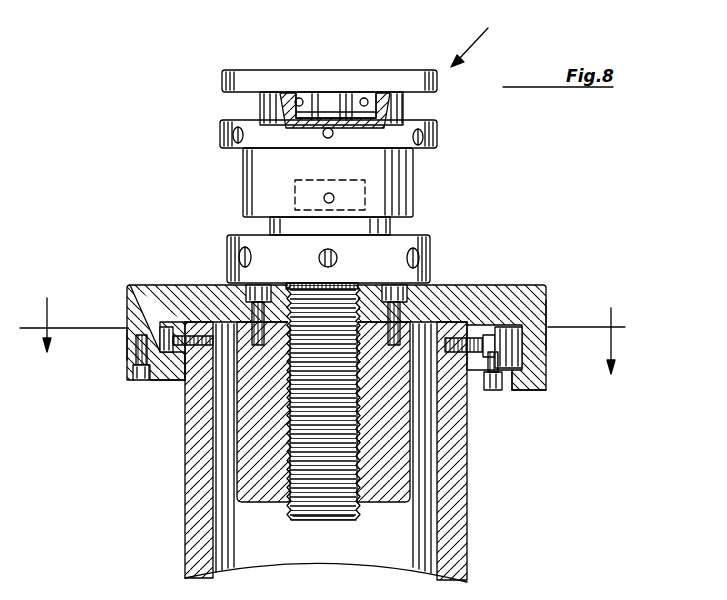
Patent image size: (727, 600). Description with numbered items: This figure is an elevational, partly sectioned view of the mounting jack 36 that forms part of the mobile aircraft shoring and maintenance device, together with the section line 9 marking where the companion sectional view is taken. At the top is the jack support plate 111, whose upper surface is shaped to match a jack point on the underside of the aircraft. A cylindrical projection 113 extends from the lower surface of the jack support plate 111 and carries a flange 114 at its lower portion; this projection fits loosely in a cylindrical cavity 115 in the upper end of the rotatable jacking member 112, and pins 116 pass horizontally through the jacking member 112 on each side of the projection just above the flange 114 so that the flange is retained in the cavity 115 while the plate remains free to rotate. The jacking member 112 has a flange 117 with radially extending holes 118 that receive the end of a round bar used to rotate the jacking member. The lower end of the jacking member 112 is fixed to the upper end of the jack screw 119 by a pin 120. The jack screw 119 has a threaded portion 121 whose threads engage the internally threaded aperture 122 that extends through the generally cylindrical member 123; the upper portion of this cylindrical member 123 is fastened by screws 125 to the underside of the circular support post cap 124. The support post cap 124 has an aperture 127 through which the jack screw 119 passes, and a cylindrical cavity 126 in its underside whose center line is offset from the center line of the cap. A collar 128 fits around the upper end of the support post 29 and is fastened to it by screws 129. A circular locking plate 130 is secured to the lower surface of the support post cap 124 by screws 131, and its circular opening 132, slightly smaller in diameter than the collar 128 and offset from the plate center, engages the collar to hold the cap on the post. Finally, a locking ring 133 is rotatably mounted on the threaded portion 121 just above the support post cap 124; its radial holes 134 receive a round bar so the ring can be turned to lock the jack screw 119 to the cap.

The support post 29 is at (460, 557).
The mounting jack 36 is at (479, 37).
The jack support plate 111 is at (400, 75).
The jacking member 112 is at (415, 175).
The cylindrical projection 113 is at (343, 97).
The flange 114 is at (323, 115).
The cylindrical cavity 115 is at (290, 110).
The pins 116 is at (298, 97).
The flange 117 is at (437, 126).
The radially extending holes 118 is at (437, 141).
The jack screw 119 is at (280, 230).
The pin 120 is at (324, 197).
The threaded portion 121 is at (343, 445).
The aperture 122 is at (353, 490).
The cylindrical member 123 is at (253, 481).
The support post cap 124 is at (547, 297).
The screws 125 is at (248, 293).
The cylindrical cavity 126 is at (522, 352).
The aperture 127 is at (360, 283).
The collar 128 is at (168, 363).
The screws 129 is at (130, 333).
The circular locking plate 130 is at (183, 387).
The screws 131 is at (135, 381).
The circular opening 132 is at (493, 390).
The locking ring 133 is at (430, 242).
The radial holes 134 is at (320, 255).
The section line 9- 9 is at (322, 348).